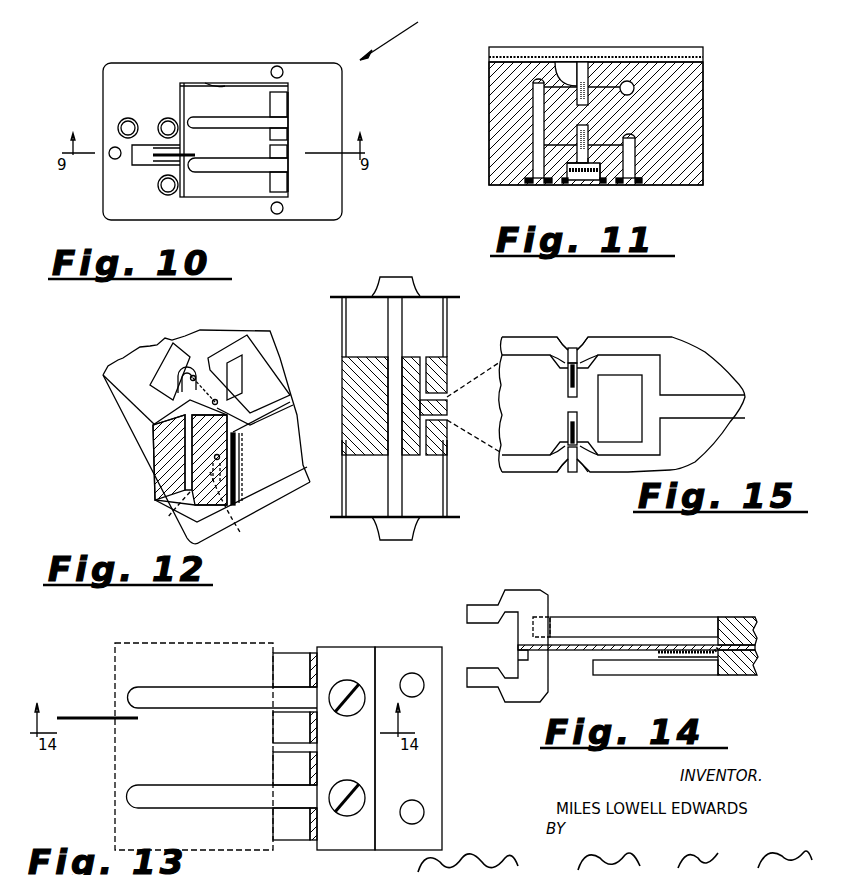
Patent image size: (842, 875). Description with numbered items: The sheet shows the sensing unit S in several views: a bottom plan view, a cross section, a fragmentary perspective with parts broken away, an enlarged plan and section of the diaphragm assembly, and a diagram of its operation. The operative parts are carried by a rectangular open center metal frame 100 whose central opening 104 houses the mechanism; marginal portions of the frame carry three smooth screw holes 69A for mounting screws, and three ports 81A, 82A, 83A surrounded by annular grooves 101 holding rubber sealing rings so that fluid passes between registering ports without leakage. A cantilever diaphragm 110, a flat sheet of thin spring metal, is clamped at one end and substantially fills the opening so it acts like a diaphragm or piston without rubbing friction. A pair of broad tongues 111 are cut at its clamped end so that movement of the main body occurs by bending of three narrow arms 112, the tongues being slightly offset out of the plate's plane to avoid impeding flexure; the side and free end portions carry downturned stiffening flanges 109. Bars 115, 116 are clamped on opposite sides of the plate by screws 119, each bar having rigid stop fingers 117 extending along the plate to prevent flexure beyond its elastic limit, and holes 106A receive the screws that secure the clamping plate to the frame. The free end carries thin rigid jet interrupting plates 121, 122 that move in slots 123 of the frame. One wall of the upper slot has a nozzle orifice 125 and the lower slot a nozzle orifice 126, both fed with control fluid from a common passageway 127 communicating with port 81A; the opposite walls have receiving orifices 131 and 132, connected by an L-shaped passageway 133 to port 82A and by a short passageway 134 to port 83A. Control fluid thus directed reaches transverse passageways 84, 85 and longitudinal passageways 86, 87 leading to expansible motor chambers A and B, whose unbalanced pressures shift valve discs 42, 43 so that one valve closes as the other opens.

In FIG. 10, the sensing unit S is at (393, 36).
In FIG. 15, the valve disc 42 is at (345, 295).
In FIG. 15, the valve disc 43 is at (345, 520).
In FIG. 10, the smooth screw holes 69A is at (282, 66).
In FIG. 10, the port 81A is at (165, 196).
In FIG. 11, the port 81A is at (577, 130).
In FIG. 15, the port 81A is at (740, 405).
In FIG. 10, the port 82A is at (121, 124).
In FIG. 12, the port 82A is at (165, 518).
In FIG. 15, the port 82A is at (500, 360).
In FIG. 10, the port 83A is at (167, 120).
In FIG. 11, the port 83A is at (636, 183).
In FIG. 12, the port 83A is at (240, 530).
In FIG. 15, the port 83A is at (500, 453).
In FIG. 15, the transverse horizontal passageway 84 is at (460, 393).
In FIG. 15, the transverse horizontal passageway 85 is at (477, 437).
In FIG. 15, the longitudinal passageway 86 is at (422, 385).
In FIG. 15, the longitudinal passageway 87 is at (422, 443).
In FIG. 15, the expansible motor chamber A is at (394, 407).
In FIG. 15, the expansible motor chamber B is at (394, 478).
In FIG. 12, the frame 100 is at (97, 443).
In FIG. 10, the annular grooves 101 is at (335, 80).
In FIG. 10, the central opening 104 is at (228, 87).
In FIG. 13, the holes 106A is at (410, 680).
In FIG. 14, the stiffening flanges 109 is at (522, 660).
In FIG. 10, the cantilever diaphragm 110 is at (242, 98).
In FIG. 13, the cantilever diaphragm 110 is at (220, 657).
In FIG. 14, the cantilever diaphragm 110 is at (612, 645).
In FIG. 10, the tongues 111 is at (282, 105).
In FIG. 13, the tongues 111 is at (302, 658).
In FIG. 14, the tongues 111 is at (695, 657).
In FIG. 10, the arms 112 is at (292, 90).
In FIG. 13, the arms 112 is at (283, 650).
In FIG. 14, the arms 112 is at (690, 650).
In FIG. 13, the bar 115 is at (355, 842).
In FIG. 14, the bar 115 is at (735, 620).
In FIG. 14, the bar 116 is at (745, 668).
In FIG. 10, the stop fingers 117 is at (197, 118).
In FIG. 13, the stop fingers 117 is at (153, 690).
In FIG. 14, the stop fingers 117 is at (665, 622).
In FIG. 13, the screws 119 is at (343, 687).
In FIG. 11, the jet interrupting plate 121 is at (583, 88).
In FIG. 12, the jet interrupting plate 121 is at (220, 355).
In FIG. 15, the jet interrupting plate 121 is at (568, 380).
In FIG. 13, the jet interrupting plate 121 is at (60, 717).
In FIG. 14, the jet interrupting plate 121 is at (472, 605).
In FIG. 11, the jet interrupting plate 122 is at (583, 175).
In FIG. 15, the jet interrupting plate 122 is at (568, 428).
In FIG. 14, the jet interrupting plate 122 is at (478, 685).
In FIG. 10, the slots 123 is at (140, 163).
In FIG. 12, the slots 123 is at (160, 385).
In FIG. 15, the slots 123 is at (569, 348).
In FIG. 11, the nozzle orifice 125 is at (560, 80).
In FIG. 12, the nozzle orifice 125 is at (187, 362).
In FIG. 15, the nozzle orifice 125 is at (592, 353).
In FIG. 11, the nozzle orifice 126 is at (565, 143).
In FIG. 15, the nozzle orifice 126 is at (593, 453).
In FIG. 11, the common passageway 127 is at (537, 102).
In FIG. 11, the receiving orifice 131 is at (610, 86).
In FIG. 12, the receiving orifice 131 is at (218, 404).
In FIG. 15, the receiving orifice 131 is at (557, 362).
In FIG. 11, the receiving orifice 132 is at (608, 183).
In FIG. 12, the receiving orifice 132 is at (220, 456).
In FIG. 15, the receiving orifice 132 is at (558, 453).
In FIG. 11, the L-shaped passageway 133 is at (635, 82).
In FIG. 12, the L-shaped passageway 133 is at (187, 443).
In FIG. 11, the short passageway 134 is at (633, 143).
In FIG. 12, the short passageway 134 is at (227, 467).